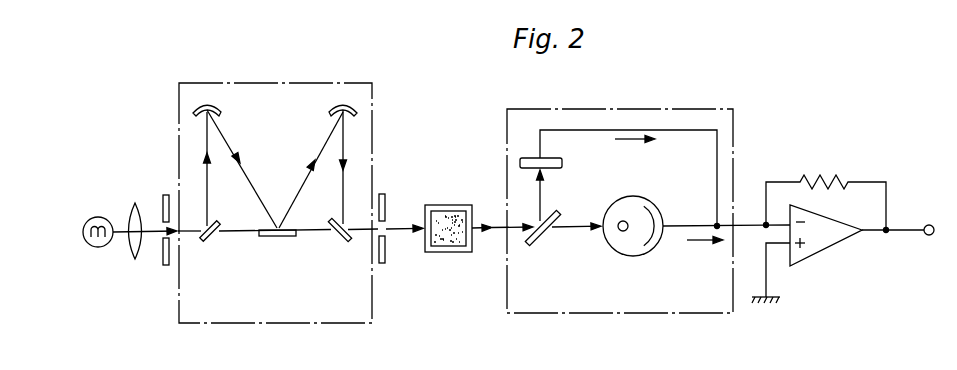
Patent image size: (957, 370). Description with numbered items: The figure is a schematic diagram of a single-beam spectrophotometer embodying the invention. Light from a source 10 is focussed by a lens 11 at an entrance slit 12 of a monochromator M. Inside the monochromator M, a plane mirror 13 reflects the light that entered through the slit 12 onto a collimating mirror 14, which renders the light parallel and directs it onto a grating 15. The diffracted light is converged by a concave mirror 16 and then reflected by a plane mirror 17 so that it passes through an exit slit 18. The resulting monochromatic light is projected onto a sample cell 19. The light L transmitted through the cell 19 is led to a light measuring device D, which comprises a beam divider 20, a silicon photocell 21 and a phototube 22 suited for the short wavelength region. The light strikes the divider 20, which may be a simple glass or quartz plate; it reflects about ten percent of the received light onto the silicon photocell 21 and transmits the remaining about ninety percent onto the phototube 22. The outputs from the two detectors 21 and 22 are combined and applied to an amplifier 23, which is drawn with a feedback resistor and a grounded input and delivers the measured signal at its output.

The source 10 is at (98, 217).
The lens 11 is at (136, 203).
The entrance slit 12 is at (163, 233).
The plane mirror 13 is at (216, 243).
The collimating mirror 14 is at (217, 108).
The grating 15 is at (280, 240).
The concave mirror 16 is at (335, 108).
The plane mirror 17 is at (340, 243).
The exit slit 18 is at (382, 221).
The sample cell 19 is at (450, 253).
The beam divider 20 is at (537, 246).
The silicon photocell 21 is at (530, 158).
The phototube 22 is at (630, 250).
The amplifier 23 is at (826, 258).
The light L is at (481, 218).
The monochromator M is at (232, 326).
The light measuring device D is at (685, 109).